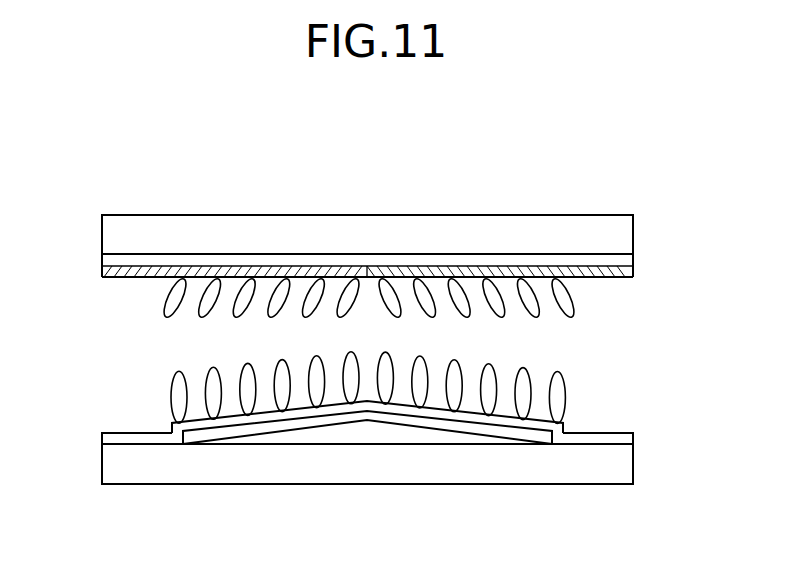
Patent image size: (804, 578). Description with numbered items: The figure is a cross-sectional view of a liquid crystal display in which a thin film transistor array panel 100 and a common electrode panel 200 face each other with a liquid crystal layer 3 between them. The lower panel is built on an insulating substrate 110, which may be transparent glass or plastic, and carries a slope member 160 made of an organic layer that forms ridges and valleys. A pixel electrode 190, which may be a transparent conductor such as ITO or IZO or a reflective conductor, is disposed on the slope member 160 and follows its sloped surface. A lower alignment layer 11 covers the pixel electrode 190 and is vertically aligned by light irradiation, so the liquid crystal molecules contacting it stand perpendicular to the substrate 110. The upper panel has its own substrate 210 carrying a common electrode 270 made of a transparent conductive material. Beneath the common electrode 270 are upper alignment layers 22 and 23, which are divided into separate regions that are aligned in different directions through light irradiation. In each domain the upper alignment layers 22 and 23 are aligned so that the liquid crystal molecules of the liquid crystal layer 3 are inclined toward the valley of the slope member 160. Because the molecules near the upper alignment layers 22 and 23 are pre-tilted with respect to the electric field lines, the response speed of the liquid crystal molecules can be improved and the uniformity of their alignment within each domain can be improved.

The common electrode panel 200 is at (402, 252).
The insulating substrate 210 is at (425, 240).
The common electrode 270 is at (280, 260).
The upper alignment layer 22 is at (127, 270).
The upper alignment layer 23 is at (607, 270).
The liquid crystal layer 3 is at (642, 282).
The thin film transistor array panel 100 is at (402, 470).
The insulating substrate 110 is at (448, 462).
The lower alignment layer 11 is at (598, 438).
The pixel electrode 190 is at (308, 423).
The slope member 160 is at (367, 432).